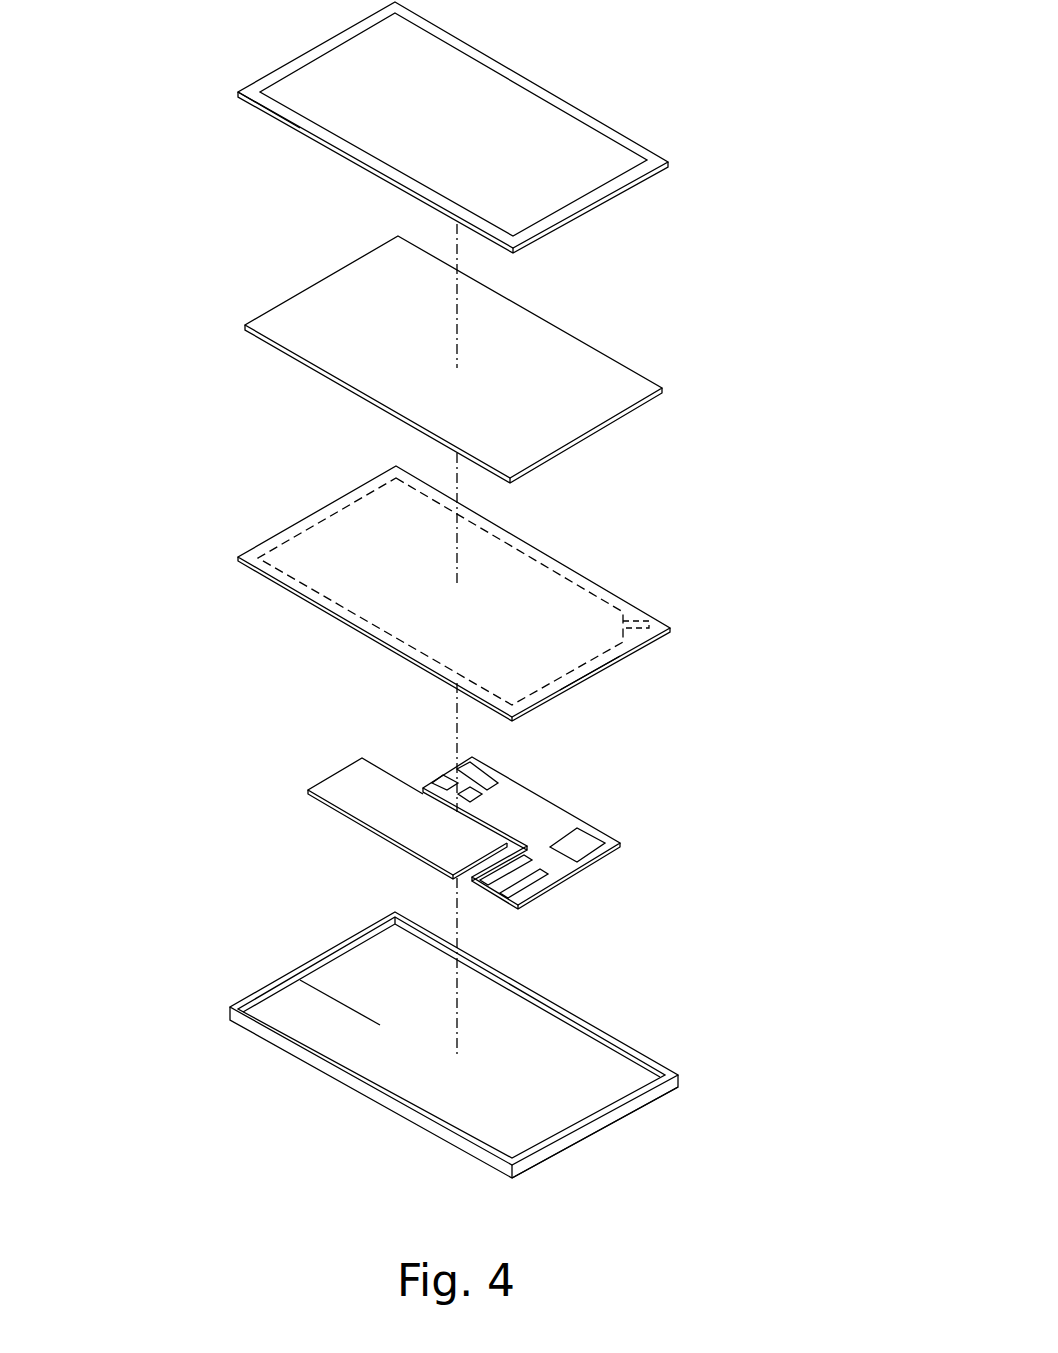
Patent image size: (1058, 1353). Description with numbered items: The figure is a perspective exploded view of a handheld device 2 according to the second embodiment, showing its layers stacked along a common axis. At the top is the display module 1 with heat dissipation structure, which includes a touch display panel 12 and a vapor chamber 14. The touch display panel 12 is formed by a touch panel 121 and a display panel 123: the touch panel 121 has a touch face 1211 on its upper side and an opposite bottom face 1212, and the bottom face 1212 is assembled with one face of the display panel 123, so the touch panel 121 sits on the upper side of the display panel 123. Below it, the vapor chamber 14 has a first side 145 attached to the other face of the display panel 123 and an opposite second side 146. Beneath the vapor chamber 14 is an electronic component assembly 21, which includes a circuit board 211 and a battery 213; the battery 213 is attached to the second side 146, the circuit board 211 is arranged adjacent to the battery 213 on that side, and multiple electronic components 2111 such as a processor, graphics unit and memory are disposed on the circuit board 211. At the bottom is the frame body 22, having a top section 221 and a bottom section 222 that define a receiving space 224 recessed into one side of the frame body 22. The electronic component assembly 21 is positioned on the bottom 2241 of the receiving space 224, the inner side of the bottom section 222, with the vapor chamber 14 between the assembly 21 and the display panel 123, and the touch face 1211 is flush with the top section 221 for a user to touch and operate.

The display module 1 is at (128, 468).
The touch display panel 12 is at (128, 312).
The touch panel 121 is at (667, 163).
The touch face 1211 is at (302, 85).
The bottom face 1212 is at (257, 103).
The display panel 123 is at (540, 345).
The vapor chamber 14 is at (670, 628).
The first side 145 is at (602, 600).
The second side 146 is at (592, 672).
The handheld device 2 is at (743, 483).
The electronic component assembly 21 is at (240, 685).
The circuit board 211 is at (424, 787).
The electronic components 2111 is at (447, 777).
The battery 213 is at (348, 787).
The frame body 22 is at (680, 1075).
The top section 221 is at (652, 1062).
The bottom section 222 is at (595, 1135).
The receiving space 224 is at (522, 1007).
The bottom 2241 is at (290, 1015).